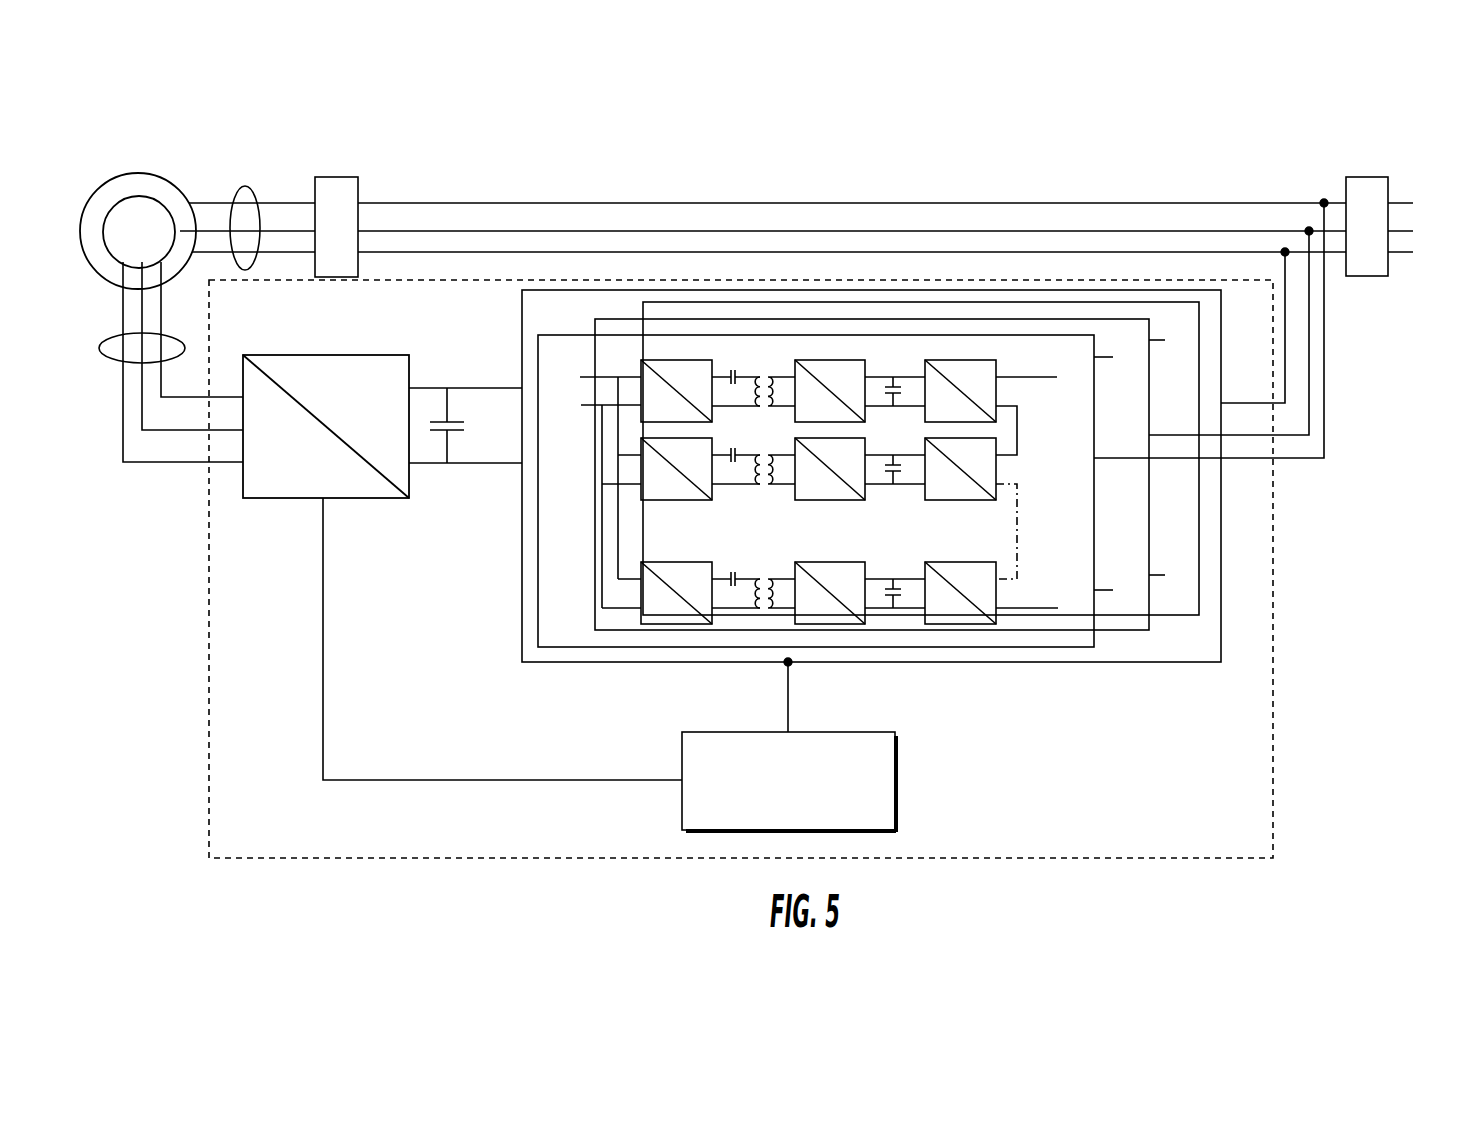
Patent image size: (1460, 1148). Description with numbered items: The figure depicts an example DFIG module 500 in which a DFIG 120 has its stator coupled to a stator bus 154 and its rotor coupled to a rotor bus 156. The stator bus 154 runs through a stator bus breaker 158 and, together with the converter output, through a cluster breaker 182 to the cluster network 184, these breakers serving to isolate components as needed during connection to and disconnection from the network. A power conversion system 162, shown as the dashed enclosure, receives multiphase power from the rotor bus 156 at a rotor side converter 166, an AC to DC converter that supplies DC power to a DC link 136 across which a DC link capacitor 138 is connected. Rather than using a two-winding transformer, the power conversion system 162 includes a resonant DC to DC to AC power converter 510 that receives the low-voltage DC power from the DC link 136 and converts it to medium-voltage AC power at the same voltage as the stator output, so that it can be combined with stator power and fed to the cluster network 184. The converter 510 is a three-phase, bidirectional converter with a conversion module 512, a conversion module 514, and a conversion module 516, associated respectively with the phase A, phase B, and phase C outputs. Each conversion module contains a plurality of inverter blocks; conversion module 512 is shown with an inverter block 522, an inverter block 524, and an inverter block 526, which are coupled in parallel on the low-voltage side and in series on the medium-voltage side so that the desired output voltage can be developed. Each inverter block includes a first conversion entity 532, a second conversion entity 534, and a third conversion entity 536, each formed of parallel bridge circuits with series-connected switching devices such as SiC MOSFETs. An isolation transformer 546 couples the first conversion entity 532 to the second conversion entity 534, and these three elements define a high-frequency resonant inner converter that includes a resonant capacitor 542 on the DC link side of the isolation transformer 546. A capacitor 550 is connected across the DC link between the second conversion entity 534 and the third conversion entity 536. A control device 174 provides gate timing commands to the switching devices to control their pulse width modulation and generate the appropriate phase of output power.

The DFIG 120 is at (140, 173).
The stator bus 154 is at (245, 186).
The stator bus breaker 158 is at (345, 177).
The cluster breaker 182 is at (1357, 177).
The cluster network 184 is at (1404, 203).
The DFIG module 500 is at (1043, 117).
The rotor bus 156 is at (110, 358).
The rotor side converter 166 is at (243, 488).
The DC link 136 is at (477, 388).
The DC link capacitor 138 is at (457, 433).
The power conversion system 162 is at (1273, 717).
The control device 174 is at (897, 768).
The resonant DC to DC to AC power converter 510 is at (1222, 593).
The conversion module 512 is at (572, 335).
The conversion module 514 is at (633, 319).
The conversion module 516 is at (673, 302).
The inverter block 522 is at (628, 377).
The inverter block 524 is at (628, 455).
The inverter block 526 is at (630, 575).
The first conversion entity 532 is at (675, 361).
The second conversion entity 534 is at (852, 361).
The third conversion entity 536 is at (984, 360).
The resonant capacitor 542 is at (733, 368).
The isolation transformer 546 is at (763, 408).
The capacitor 550 is at (897, 395).